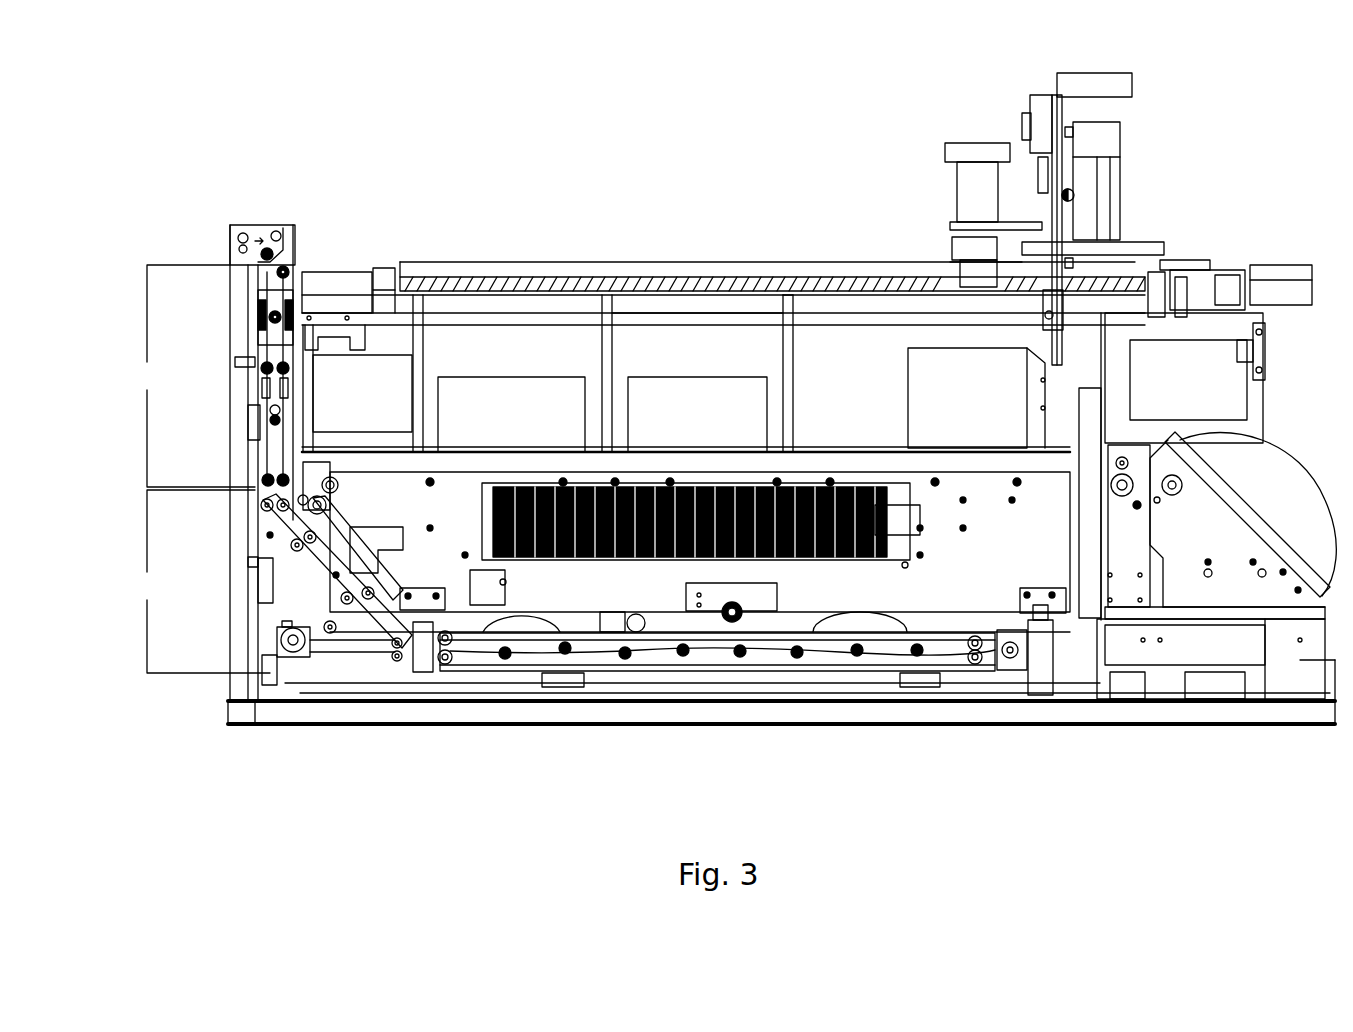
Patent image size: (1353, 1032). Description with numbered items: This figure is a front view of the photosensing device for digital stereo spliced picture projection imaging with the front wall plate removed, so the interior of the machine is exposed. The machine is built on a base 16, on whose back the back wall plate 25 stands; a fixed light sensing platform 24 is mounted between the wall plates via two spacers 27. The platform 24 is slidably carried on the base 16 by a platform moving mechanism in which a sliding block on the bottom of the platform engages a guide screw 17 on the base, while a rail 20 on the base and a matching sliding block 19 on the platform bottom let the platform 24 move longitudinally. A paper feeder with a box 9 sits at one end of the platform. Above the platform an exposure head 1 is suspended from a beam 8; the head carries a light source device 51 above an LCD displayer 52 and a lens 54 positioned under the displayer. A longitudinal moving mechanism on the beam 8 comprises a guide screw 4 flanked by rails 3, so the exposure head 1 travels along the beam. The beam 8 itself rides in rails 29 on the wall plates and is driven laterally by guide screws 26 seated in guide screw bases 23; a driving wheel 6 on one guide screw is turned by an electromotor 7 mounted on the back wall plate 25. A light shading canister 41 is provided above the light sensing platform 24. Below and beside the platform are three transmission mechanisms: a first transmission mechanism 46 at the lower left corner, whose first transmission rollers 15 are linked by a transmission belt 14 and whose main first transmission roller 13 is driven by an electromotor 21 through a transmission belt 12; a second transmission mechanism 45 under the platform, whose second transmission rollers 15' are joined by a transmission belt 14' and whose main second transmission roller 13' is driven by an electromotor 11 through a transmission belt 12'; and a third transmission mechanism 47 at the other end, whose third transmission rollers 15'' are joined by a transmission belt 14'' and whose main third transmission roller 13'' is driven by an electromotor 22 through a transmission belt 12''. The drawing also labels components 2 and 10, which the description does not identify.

The exposure head 1 is at (1017, 131).
The slide block 2 is at (1123, 164).
The rails 3 is at (1112, 186).
The guide screw 4 is at (1110, 178).
The driving wheel 6 is at (1196, 272).
The electromotor 7 is at (1287, 267).
The beam 8 is at (1116, 181).
The box 9 is at (1290, 467).
The base plate 10 is at (917, 593).
The electromotor 11 is at (1022, 640).
The transmission belt 12 is at (299, 699).
The transmission belt 12' is at (1018, 708).
The transmission belt 12'' is at (250, 226).
The main first transmission roller 13 is at (366, 728).
The main second transmission roller 13' is at (959, 718).
The main third transmission roller 13'' is at (315, 320).
The transmission belt 14 is at (298, 555).
The transmission belt 14' is at (865, 709).
The transmission belt 14'' is at (237, 367).
The first transmission rollers 15 is at (293, 625).
The second transmission rollers 15' is at (622, 702).
The third transmission rollers 15'' is at (237, 445).
The base 16 is at (717, 710).
The guide screw 17 is at (743, 689).
The sliding block 19 is at (448, 647).
The rail 20 is at (808, 712).
The electromotor 21 is at (256, 717).
The electromotor 22 is at (258, 322).
The guide screw base 23 is at (383, 282).
The light sensing platform 24 is at (600, 482).
The back wall plate 25 is at (737, 318).
The guide screw 26 is at (790, 305).
The spacers 27 is at (327, 328).
The rails 29 is at (560, 267).
The light shading canister 41 is at (946, 312).
The second transmission mechanism 45 is at (700, 779).
The first transmission mechanism 46 is at (199, 581).
The third transmission mechanism 47 is at (191, 376).
The light source device 51 is at (908, 100).
The LCD displayer 52 is at (938, 153).
The lens 54 is at (927, 207).